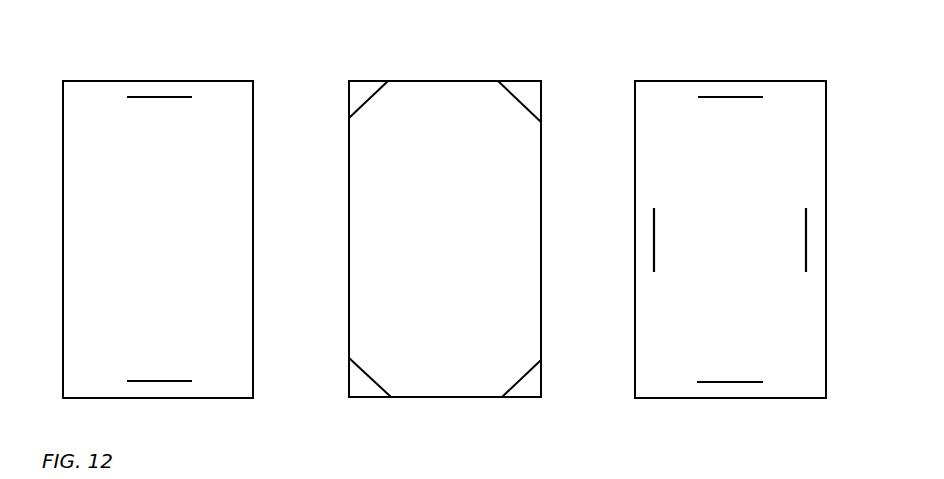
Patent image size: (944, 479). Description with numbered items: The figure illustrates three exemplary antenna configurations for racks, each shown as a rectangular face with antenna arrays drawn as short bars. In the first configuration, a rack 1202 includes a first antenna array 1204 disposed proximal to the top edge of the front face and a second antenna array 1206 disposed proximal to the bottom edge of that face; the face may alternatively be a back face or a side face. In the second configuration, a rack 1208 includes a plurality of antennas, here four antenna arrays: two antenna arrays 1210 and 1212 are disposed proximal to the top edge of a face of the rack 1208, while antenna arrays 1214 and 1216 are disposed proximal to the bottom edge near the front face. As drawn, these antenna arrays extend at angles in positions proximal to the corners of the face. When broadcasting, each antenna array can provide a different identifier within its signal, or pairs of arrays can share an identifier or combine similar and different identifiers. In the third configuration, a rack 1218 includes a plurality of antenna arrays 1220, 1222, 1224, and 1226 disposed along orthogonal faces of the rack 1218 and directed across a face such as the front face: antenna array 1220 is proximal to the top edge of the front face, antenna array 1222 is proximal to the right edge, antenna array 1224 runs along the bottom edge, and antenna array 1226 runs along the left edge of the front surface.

The rack 1202 is at (98, 81).
The first antenna array 1204 is at (160, 97).
The second antenna array 1206 is at (160, 381).
The rack 1208 is at (430, 81).
The antenna array 1210 is at (365, 97).
The antenna array 1212 is at (525, 102).
The antenna array 1214 is at (366, 382).
The antenna array 1216 is at (523, 382).
The rack 1218 is at (651, 81).
The antenna array 1220 is at (730, 97).
The antenna array 1222 is at (806, 240).
The antenna array 1224 is at (730, 382).
The antenna array 1226 is at (654, 240).